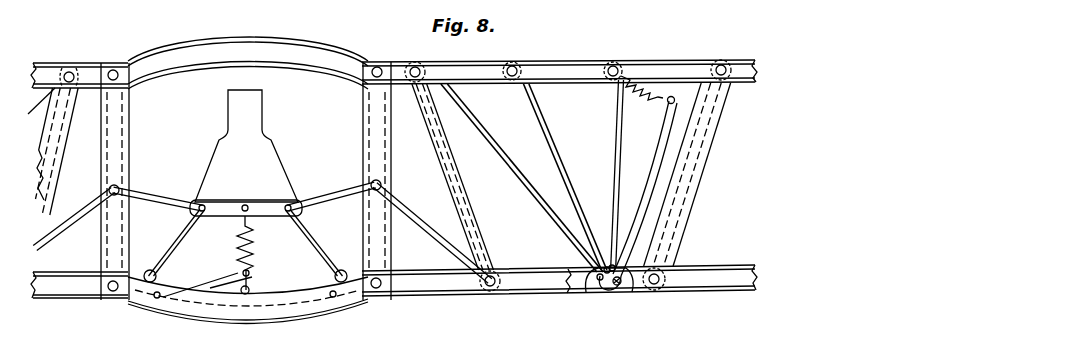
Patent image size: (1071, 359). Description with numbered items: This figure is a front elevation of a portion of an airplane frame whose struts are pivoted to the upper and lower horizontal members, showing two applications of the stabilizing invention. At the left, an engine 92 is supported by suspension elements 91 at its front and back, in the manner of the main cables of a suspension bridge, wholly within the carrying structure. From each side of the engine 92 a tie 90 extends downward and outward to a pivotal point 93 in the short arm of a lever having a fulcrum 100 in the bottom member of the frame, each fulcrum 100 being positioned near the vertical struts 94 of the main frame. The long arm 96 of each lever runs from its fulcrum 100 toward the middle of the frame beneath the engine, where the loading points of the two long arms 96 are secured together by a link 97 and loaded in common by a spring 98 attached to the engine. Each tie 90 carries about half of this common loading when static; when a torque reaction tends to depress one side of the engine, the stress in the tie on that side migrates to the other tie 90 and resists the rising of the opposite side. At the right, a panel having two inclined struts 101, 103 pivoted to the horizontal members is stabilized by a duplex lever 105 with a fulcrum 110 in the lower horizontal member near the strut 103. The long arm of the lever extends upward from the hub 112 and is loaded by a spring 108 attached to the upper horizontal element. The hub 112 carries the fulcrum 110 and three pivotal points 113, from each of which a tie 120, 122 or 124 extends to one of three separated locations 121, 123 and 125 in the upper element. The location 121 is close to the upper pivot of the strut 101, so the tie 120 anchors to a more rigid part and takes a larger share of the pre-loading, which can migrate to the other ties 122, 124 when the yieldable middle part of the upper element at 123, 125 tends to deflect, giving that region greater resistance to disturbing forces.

The tie 90 is at (185, 230).
The suspension elements 91 is at (148, 173).
The engine 92 is at (262, 140).
The pivotal point 93 is at (147, 282).
The vertical struts 94 is at (129, 143).
The long arm 96 is at (225, 282).
The link 97 is at (252, 280).
The spring 98 is at (240, 248).
The fulcrum 100 is at (264, 321).
The inclined strut 101 is at (452, 172).
The inclined strut 103 is at (693, 171).
The duplex lever 105 is at (636, 195).
The spring 108 is at (659, 96).
The fulcrum 110 is at (640, 305).
The hub 112 is at (604, 301).
The pivotal points 113 is at (597, 287).
The tie 120 is at (483, 138).
The location 121 is at (414, 66).
The tie 122 is at (553, 138).
The location 123 is at (538, 54).
The tie 124 is at (616, 168).
The location 125 is at (610, 65).